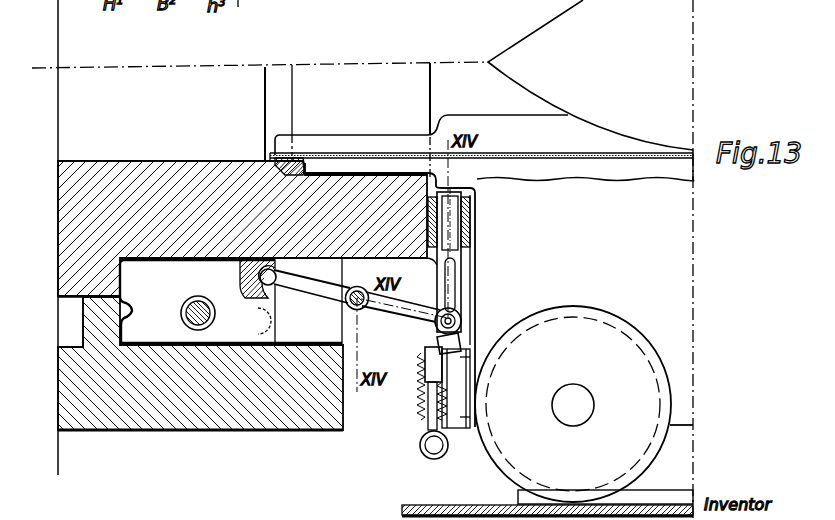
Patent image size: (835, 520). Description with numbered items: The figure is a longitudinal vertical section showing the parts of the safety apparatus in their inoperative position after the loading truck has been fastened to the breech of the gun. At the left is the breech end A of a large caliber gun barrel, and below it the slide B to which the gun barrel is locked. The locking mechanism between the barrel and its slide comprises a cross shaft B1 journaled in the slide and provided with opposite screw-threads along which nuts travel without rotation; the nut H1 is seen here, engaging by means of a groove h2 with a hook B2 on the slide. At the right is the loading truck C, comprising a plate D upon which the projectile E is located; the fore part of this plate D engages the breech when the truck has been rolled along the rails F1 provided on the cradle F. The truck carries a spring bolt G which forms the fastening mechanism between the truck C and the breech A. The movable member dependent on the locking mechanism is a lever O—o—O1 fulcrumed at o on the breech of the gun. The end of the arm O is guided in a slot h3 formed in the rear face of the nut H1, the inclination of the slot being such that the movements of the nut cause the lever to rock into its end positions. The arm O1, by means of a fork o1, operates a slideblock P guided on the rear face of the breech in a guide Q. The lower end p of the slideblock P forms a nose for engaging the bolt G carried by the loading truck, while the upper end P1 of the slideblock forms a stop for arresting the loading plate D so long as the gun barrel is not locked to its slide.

The breech end of gun barrel A is at (103, 197).
The plate D is at (373, 147).
The projectile E is at (567, 28).
The loading truck C is at (673, 302).
The guide Q is at (462, 285).
The slideblock P is at (455, 242).
The upper end of slideblock P1 is at (452, 207).
The nut H1 is at (145, 333).
The cross shaft B1 is at (197, 322).
The slide B is at (237, 413).
The hook B2 is at (125, 307).
The groove h2 is at (125, 311).
The slot h3 is at (258, 300).
The arm of lever O is at (315, 287).
The fulcrum o is at (362, 310).
The arm of lever O1 is at (412, 313).
The fork o1 is at (454, 313).
The lower end of slideblock p is at (453, 342).
The spring bolt G is at (430, 372).
The cradle F is at (420, 513).
The rail F1 is at (524, 500).